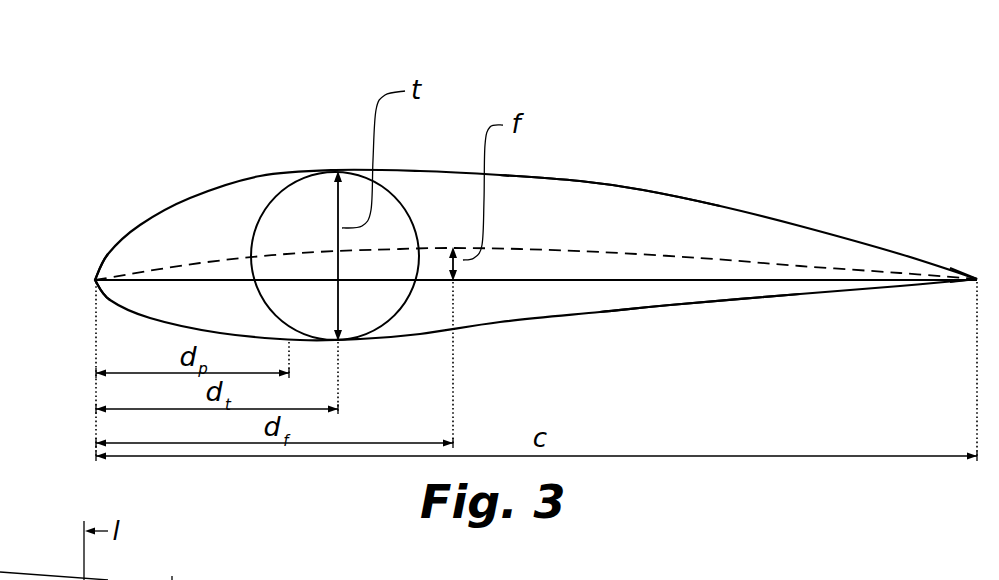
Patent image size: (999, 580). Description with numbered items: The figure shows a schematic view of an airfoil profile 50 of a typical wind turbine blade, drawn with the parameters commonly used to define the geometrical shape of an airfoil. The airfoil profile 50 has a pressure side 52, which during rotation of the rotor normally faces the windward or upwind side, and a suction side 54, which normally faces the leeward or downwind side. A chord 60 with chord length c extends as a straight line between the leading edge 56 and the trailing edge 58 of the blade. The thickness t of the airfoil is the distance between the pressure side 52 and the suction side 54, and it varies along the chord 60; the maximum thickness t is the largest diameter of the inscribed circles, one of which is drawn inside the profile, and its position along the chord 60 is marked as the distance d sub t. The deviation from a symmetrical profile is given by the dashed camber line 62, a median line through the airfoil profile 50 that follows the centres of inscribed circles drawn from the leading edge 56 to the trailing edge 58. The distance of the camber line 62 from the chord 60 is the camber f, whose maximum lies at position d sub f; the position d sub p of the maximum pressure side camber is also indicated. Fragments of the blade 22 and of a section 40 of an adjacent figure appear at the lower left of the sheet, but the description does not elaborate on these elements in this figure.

The airfoil profile 50 is at (508, 84).
The pressure side 52 is at (711, 308).
The suction side 54 is at (644, 188).
The leading edge 56 is at (95, 279).
The trailing edge 58 is at (977, 276).
The chord 60 is at (753, 279).
The camber line 62 is at (525, 249).
The blade section (adjacent figure) 40 is at (54, 532).
The blade (adjacent figure) 22 is at (172, 579).